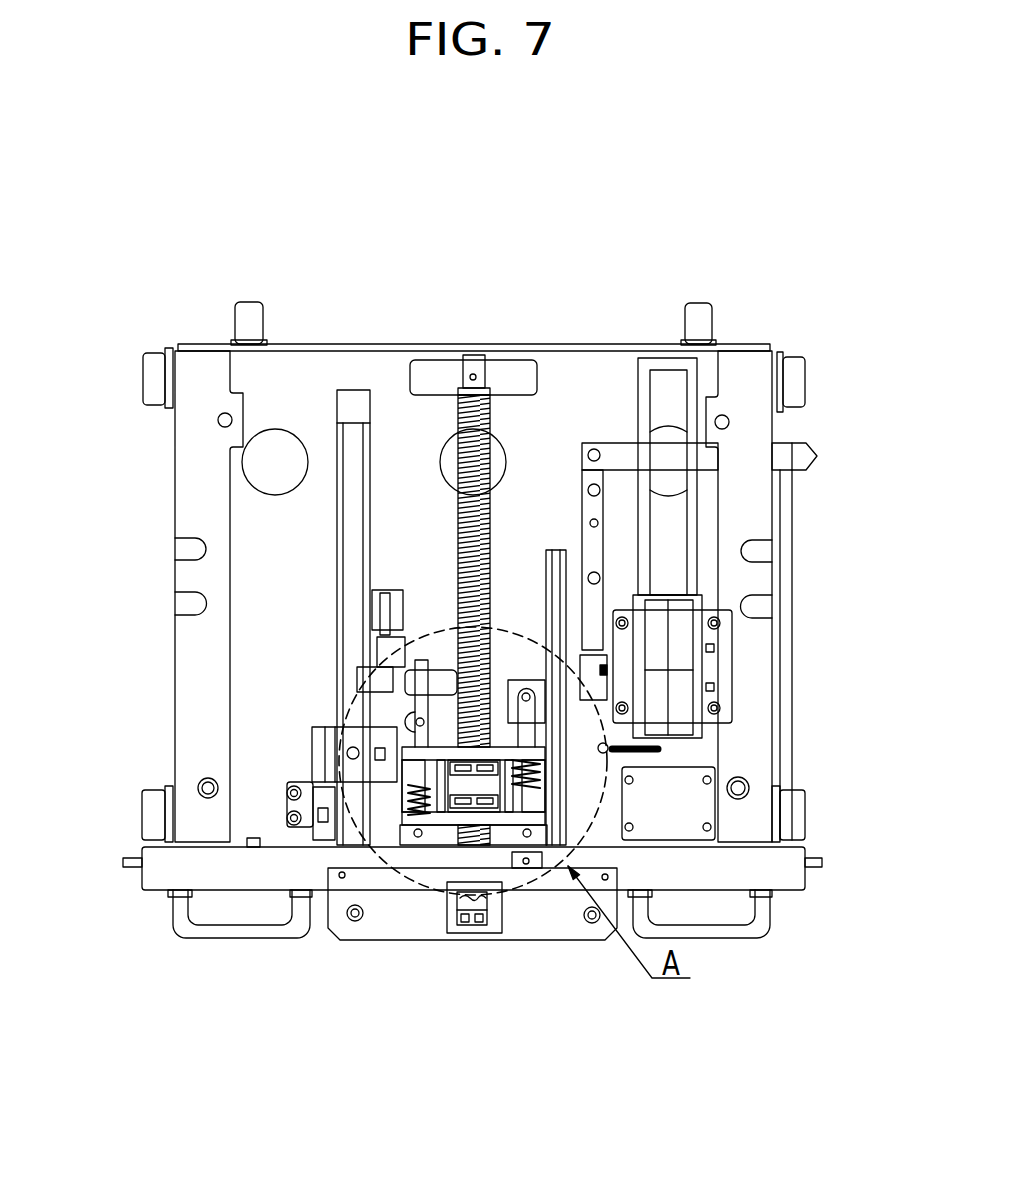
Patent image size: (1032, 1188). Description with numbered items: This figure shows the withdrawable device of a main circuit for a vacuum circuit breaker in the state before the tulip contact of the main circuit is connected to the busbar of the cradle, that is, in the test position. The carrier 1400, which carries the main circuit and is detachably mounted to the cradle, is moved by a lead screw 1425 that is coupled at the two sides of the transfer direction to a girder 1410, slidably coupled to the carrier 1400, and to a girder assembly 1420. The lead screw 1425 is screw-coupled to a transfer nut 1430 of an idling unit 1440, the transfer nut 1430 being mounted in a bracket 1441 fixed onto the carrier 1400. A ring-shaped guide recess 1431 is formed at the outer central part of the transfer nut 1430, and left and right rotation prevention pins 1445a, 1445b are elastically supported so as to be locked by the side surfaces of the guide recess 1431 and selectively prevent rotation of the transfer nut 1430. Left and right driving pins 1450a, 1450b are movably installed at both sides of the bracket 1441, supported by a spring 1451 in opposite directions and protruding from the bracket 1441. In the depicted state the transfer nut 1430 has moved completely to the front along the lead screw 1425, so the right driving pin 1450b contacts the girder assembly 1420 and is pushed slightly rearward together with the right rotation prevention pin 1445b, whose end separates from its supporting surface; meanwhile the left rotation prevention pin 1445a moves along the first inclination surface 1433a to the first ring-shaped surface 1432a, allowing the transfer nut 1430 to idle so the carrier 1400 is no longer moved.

The carrier 1400 is at (595, 370).
The girder 1410 is at (517, 390).
The girder assembly 1420 is at (830, 890).
The lead screw 1425 is at (458, 418).
The transfer nut 1430 is at (445, 782).
The guide recess 1431 is at (473, 787).
The first ring-shaped surface 1432a is at (495, 782).
The first inclination surface 1433a is at (443, 768).
The idling unit 1440 is at (417, 907).
The bracket 1441 is at (544, 808).
The left rotation prevention pin 1445a is at (408, 772).
The right rotation prevention pin 1445b is at (540, 788).
The left driving pin 1450a is at (420, 700).
The right driving pin 1450b is at (530, 724).
The spring 1451 is at (556, 758).